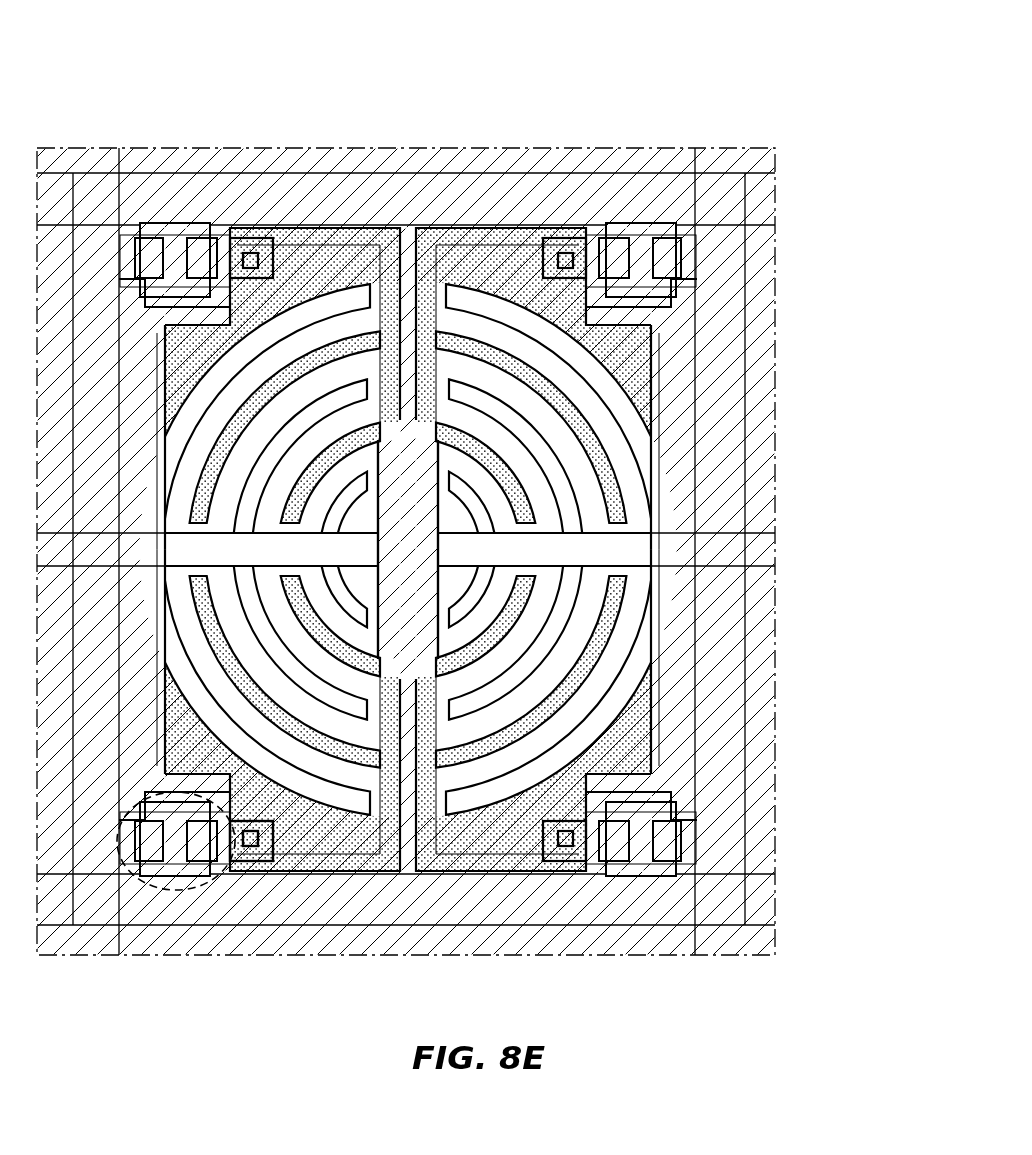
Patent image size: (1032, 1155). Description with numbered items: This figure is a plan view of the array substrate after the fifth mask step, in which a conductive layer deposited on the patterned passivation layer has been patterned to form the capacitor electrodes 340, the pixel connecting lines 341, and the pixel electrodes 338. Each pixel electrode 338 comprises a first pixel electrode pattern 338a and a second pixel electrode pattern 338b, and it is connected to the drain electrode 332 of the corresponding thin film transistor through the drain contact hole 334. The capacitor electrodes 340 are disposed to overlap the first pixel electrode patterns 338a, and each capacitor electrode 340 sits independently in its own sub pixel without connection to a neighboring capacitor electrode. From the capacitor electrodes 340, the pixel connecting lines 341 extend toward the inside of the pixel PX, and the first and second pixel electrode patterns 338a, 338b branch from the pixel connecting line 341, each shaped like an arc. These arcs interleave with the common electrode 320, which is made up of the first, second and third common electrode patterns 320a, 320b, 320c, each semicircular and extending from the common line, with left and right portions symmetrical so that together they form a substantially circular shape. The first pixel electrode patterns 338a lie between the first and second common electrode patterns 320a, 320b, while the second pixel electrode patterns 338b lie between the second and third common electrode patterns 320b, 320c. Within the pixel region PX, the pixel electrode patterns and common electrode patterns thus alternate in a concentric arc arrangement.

The pixel electrode 338 is at (543, 67).
The first pixel electrode pattern 338a is at (347, 340).
The second pixel electrode pattern 338b is at (440, 310).
The capacitor electrode 340 is at (305, 265).
The pixel connecting line 341 is at (362, 433).
The common electrode 320 is at (546, 549).
The first common electrode pattern 320a is at (660, 388).
The second common electrode pattern 320b is at (575, 500).
The third common electrode pattern 320c is at (485, 580).
The pixel region PX is at (690, 333).
The drain electrode 332 is at (200, 863).
The drain contact hole 334 is at (260, 853).